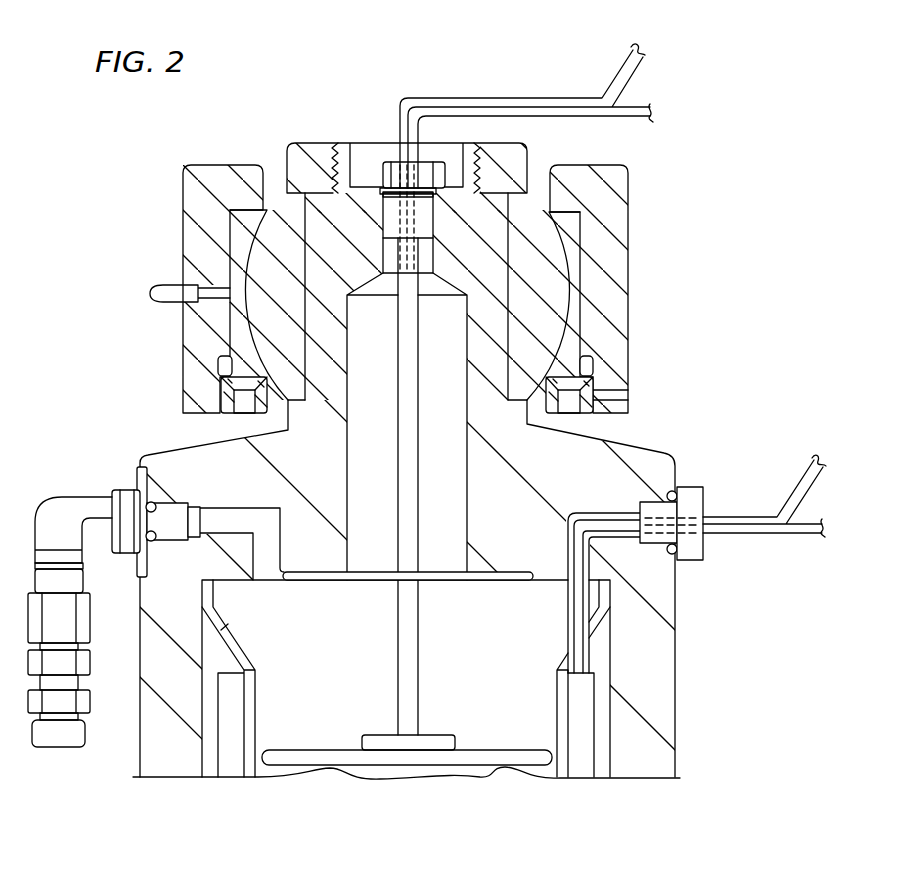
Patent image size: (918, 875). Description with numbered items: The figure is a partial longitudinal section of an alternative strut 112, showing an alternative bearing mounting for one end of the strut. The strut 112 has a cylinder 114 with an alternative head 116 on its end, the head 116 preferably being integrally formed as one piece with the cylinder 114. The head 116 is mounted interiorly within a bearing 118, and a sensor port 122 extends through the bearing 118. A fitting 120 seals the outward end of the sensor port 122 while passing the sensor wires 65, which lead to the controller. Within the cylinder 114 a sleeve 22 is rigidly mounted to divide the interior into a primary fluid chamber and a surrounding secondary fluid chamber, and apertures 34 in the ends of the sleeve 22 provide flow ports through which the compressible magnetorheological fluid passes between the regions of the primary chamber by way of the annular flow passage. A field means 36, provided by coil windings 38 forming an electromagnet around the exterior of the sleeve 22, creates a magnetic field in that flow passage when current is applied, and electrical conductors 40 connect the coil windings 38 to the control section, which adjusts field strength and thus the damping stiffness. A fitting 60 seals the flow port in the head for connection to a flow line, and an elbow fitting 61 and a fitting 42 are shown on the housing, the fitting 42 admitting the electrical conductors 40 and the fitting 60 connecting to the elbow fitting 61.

The sleeve 22 is at (606, 603).
The apertures 34 is at (587, 632).
The field means 36 is at (586, 770).
The coil windings 38 is at (233, 768).
The electrical conductors 40 is at (787, 503).
The fitting 42 is at (689, 487).
The fitting 60 is at (123, 492).
The elbow fitting 61 is at (86, 628).
The sensor wires 65 is at (625, 84).
The alternative strut 112 is at (643, 432).
The cylinder 114 is at (662, 758).
The alternative head 116 is at (178, 442).
The bearing 118 is at (577, 268).
The fitting 120 is at (378, 168).
The sensor port 122 is at (392, 213).